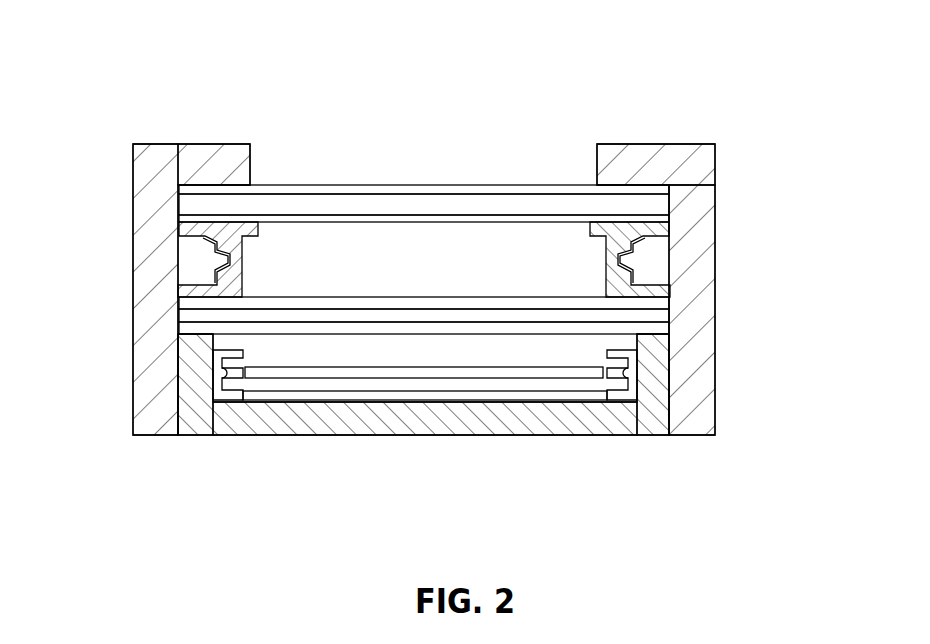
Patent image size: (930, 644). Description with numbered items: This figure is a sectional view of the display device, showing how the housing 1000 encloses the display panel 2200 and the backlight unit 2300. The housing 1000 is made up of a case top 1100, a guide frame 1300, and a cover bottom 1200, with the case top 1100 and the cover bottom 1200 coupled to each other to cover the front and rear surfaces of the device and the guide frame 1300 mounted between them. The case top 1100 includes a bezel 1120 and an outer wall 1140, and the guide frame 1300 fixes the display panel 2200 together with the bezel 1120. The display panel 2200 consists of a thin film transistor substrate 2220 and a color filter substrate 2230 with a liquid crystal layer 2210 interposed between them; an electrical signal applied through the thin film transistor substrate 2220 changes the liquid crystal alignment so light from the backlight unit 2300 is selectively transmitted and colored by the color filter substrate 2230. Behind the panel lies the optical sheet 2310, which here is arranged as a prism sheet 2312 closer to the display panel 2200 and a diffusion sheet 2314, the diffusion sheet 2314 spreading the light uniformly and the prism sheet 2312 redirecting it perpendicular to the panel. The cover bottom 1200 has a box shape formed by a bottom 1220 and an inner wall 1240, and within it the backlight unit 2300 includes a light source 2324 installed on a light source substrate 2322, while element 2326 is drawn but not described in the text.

The camera module 1000 is at (430, 40).
The upper housing 1100 is at (118, 146).
The upper housing top ledge 1120 is at (227, 154).
The upper housing side wall 1140 is at (160, 268).
The lower housing / base 1200 is at (229, 452).
The base bottom plate 1220 is at (387, 437).
The base side wall 1240 is at (183, 345).
The support frame 1300 is at (258, 233).
The upper plate assembly 2200 is at (810, 170).
The upper plate middle layer 2210 is at (670, 212).
The upper plate top layer 2220 is at (670, 190).
The upper plate bottom layer 2230 is at (670, 220).
The lower plate assembly 2300 is at (818, 320).
The lower plate stack 2310 is at (746, 305).
The lower plate upper layer 2312 is at (670, 300).
The lower plate lower layer 2314 is at (670, 326).
The bottom support bar 2322 is at (655, 402).
The upper support bar 2324 is at (620, 370).
The side bracket 2326 is at (625, 382).